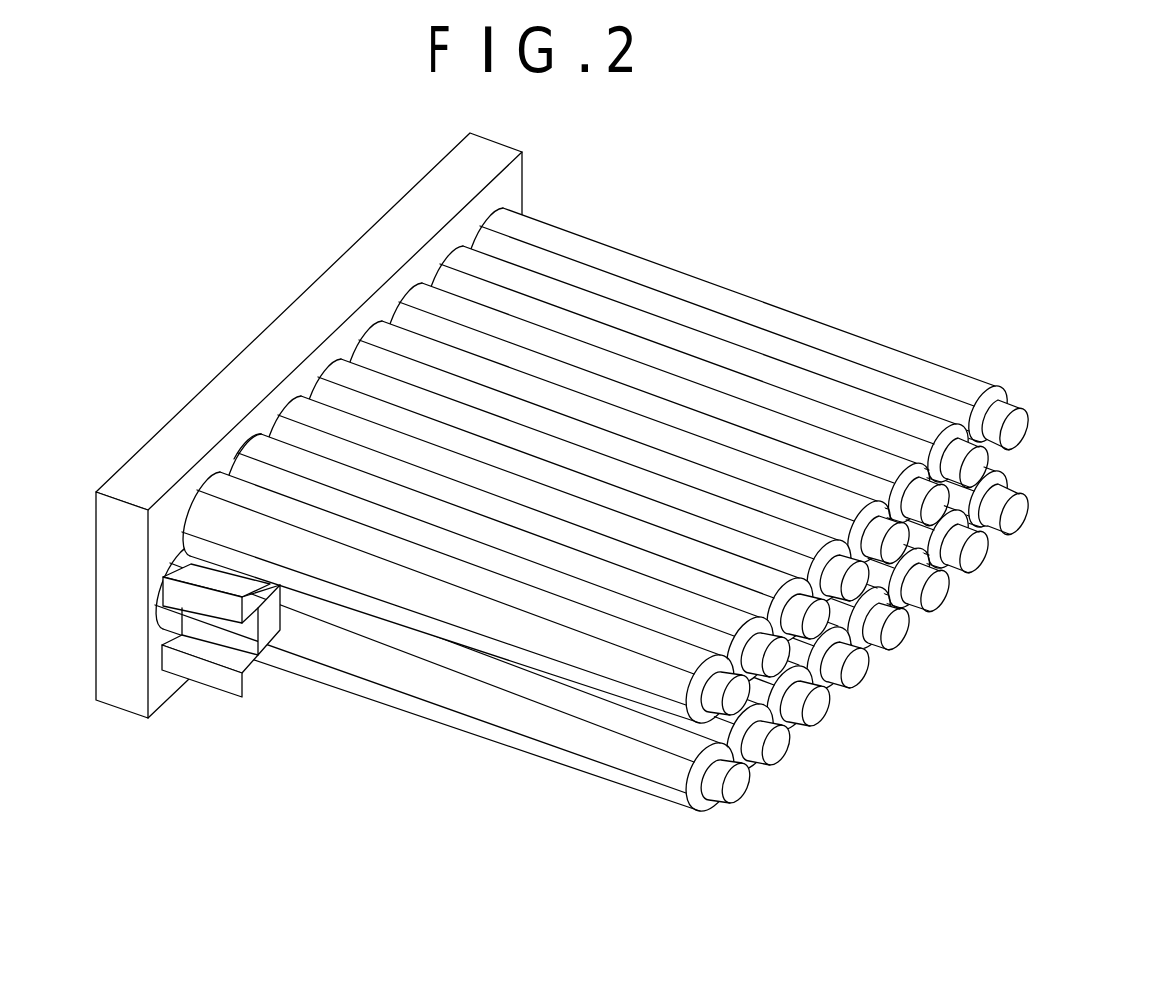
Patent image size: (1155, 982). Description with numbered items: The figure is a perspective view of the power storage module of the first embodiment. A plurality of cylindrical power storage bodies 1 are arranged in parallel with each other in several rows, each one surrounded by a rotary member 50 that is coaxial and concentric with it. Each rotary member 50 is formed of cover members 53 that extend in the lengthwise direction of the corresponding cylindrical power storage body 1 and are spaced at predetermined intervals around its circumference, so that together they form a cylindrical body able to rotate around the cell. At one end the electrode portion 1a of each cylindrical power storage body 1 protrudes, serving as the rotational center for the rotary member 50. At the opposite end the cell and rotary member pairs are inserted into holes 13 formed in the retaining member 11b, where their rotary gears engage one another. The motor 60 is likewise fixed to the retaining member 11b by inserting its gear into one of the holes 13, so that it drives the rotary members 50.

The cylindrical power storage body 1 is at (455, 707).
The electrode portion 1a is at (1024, 432).
The retaining member 11b is at (433, 200).
The hole 13 is at (272, 415).
The rotary member 50 is at (436, 716).
The cover member 53 is at (621, 716).
The motor 60 is at (206, 693).